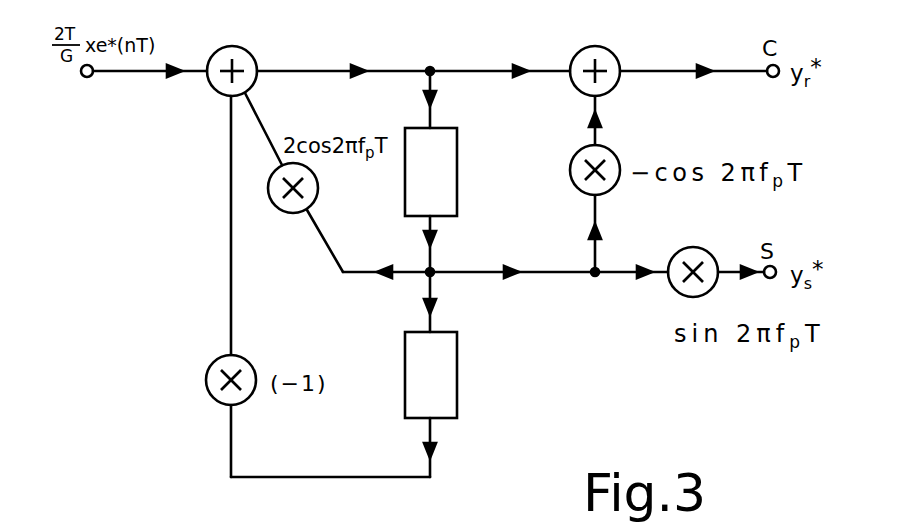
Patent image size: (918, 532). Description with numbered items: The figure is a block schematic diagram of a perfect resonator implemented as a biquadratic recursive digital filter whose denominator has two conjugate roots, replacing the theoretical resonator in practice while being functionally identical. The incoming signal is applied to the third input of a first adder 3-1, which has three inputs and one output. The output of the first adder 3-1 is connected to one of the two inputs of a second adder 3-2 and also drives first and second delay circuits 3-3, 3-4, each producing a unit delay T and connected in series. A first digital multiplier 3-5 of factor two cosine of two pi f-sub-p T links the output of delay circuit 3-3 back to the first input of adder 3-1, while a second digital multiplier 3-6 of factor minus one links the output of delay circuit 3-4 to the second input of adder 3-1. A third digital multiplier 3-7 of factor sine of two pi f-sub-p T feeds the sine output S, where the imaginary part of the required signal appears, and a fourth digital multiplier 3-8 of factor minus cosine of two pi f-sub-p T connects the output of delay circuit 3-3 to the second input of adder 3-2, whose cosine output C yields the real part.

The first adder 3-1 is at (253, 50).
The second adder 3-2 is at (607, 50).
The first delay circuit 3-3 is at (458, 157).
The second delay circuit 3-4 is at (457, 363).
The first digital multiplier 3-5 is at (283, 213).
The second digital multiplier 3-6 is at (212, 397).
The third digital multiplier 3-7 is at (673, 285).
The fourth digital multiplier 3-8 is at (575, 187).